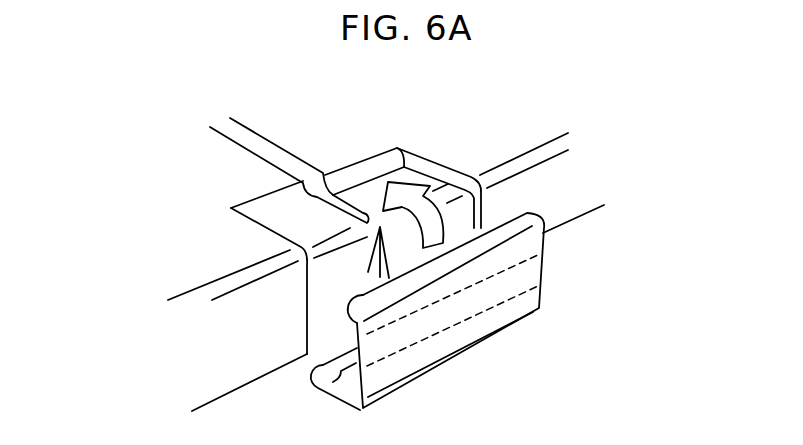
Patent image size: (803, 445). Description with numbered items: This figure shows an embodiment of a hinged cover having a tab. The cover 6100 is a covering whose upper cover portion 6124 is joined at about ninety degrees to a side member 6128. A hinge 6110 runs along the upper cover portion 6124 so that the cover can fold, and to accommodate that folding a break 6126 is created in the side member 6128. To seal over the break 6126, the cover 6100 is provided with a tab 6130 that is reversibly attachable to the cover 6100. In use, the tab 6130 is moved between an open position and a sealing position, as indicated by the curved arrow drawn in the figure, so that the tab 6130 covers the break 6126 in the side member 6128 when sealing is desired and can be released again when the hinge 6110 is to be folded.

The cover 6100 is at (478, 143).
The hinge 6110 is at (238, 137).
The upper cover portion 6124 is at (412, 131).
The break 6126 is at (377, 275).
The side member 6128 is at (243, 361).
The tab 6130 is at (457, 333).